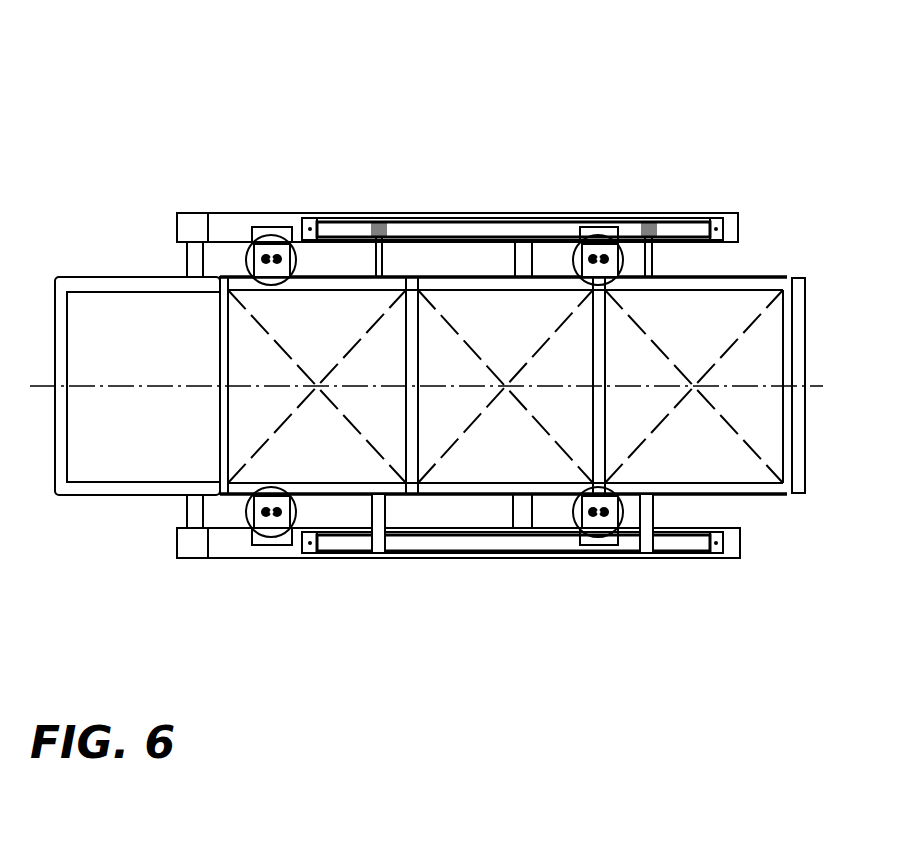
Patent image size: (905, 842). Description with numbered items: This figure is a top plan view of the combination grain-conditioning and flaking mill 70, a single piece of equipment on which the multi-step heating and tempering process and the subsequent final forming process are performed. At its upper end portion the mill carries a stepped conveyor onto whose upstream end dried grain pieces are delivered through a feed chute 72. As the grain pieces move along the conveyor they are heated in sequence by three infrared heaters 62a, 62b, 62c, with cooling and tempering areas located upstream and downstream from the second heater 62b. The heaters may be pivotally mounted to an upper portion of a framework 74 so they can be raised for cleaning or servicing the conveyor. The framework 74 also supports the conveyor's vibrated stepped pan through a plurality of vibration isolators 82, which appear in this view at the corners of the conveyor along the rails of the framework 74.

The combination grain-conditioning and flaking mill 70 is at (512, 258).
The feed chute 72 is at (93, 303).
The framework 74 is at (430, 213).
The vibration isolators 82 is at (268, 238).
The infrared heater 62a is at (333, 326).
The second infrared heater 62b is at (522, 326).
The infrared heater 62c is at (711, 326).